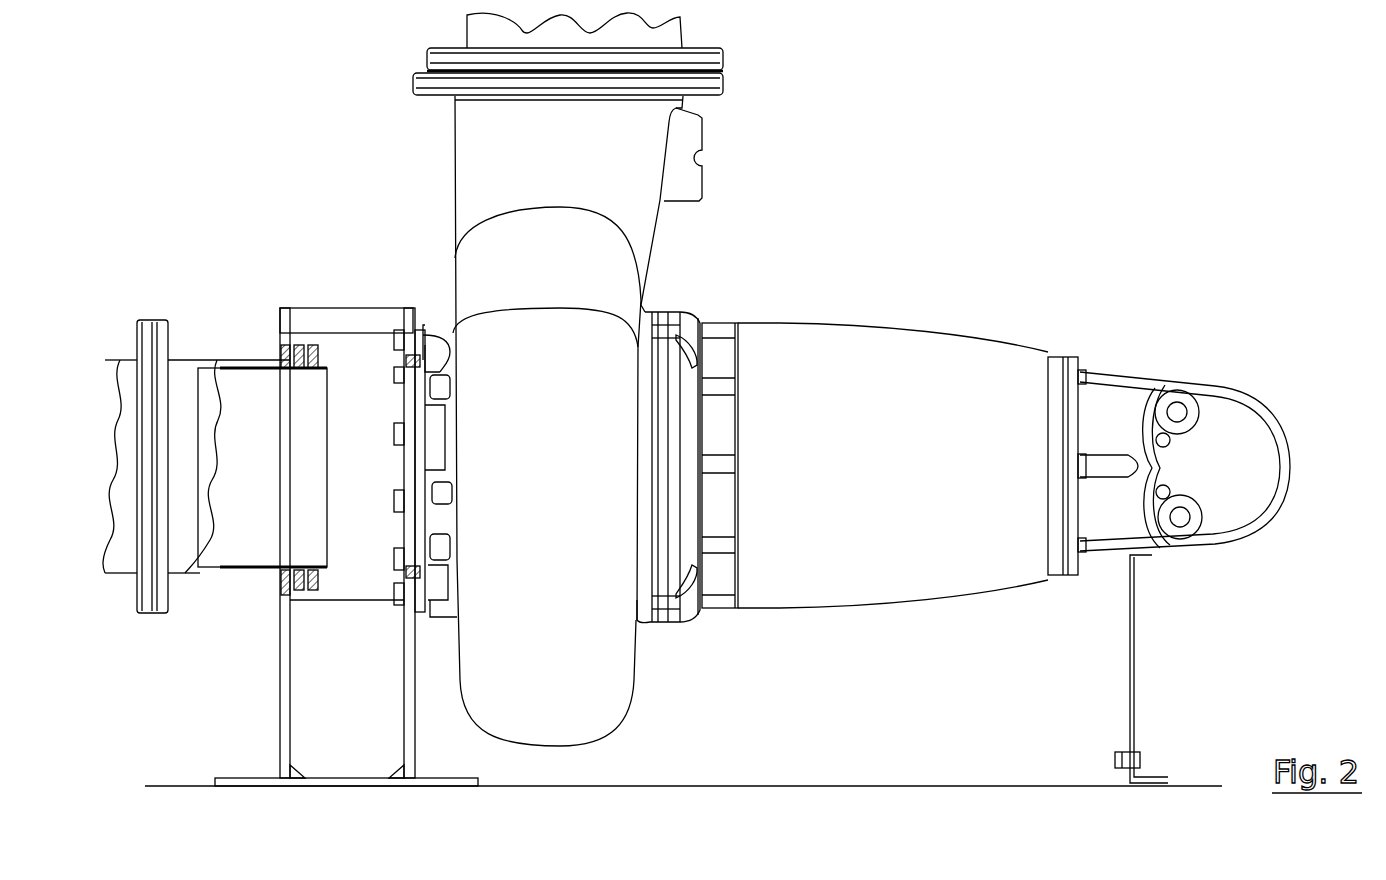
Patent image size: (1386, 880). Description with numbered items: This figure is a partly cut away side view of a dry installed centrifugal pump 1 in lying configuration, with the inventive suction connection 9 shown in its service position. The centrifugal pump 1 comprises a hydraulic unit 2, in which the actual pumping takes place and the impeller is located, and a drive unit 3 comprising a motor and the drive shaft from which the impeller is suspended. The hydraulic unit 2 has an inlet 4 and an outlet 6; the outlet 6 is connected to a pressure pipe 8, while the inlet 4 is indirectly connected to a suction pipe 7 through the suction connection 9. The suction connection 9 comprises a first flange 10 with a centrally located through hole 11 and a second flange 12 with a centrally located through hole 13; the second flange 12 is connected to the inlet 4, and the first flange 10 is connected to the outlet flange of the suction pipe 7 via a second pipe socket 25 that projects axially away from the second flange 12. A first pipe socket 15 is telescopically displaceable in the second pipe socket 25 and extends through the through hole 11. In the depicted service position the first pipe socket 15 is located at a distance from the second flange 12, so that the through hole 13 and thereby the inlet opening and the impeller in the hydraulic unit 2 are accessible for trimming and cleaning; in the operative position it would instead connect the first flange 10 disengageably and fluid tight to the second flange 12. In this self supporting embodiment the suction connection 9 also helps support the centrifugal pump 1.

The centrifugal pump 1 is at (909, 270).
The hydraulic unit 2 is at (630, 254).
The drive unit 3 is at (814, 345).
The inlet 4 is at (432, 322).
The outlet 6 is at (723, 81).
The suction pipe 7 is at (123, 372).
The pressure pipe 8 is at (676, 38).
The suction connection 9 is at (329, 308).
The first flange 10 is at (285, 664).
The through hole 11 is at (280, 350).
The second flange 12 is at (409, 657).
The through hole 13 is at (405, 458).
The first pipe socket 15 is at (262, 548).
The second pipe socket 25 is at (186, 370).